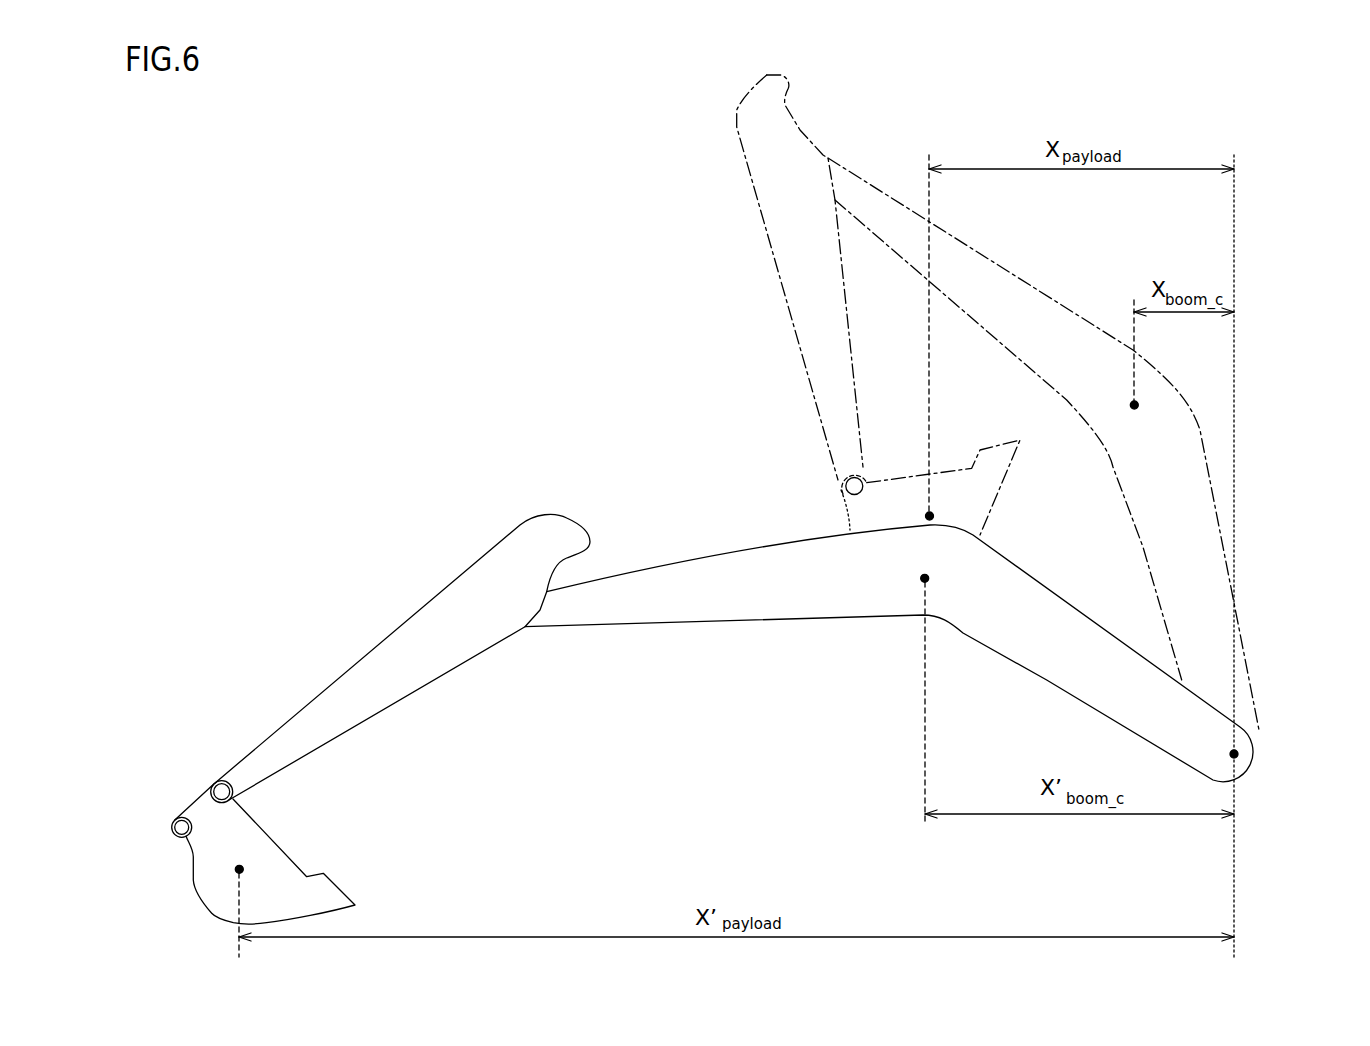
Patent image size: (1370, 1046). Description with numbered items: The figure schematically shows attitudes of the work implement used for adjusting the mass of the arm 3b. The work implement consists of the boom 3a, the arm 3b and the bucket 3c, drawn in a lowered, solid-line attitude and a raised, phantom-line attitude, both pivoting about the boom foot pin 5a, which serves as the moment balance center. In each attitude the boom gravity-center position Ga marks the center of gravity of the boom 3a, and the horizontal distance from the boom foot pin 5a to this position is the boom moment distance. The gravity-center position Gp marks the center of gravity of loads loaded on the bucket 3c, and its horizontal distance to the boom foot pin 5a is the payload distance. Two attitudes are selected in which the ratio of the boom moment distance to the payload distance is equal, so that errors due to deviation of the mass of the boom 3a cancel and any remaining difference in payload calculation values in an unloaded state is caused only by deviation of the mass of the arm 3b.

The boom 3a is at (730, 565).
The arm 3b is at (318, 720).
The bucket 3c is at (202, 857).
The boom foot pin 5a is at (1238, 754).
The boom gravity-center position Ga is at (924, 578).
The gravity-center position of loads Gp is at (239, 870).